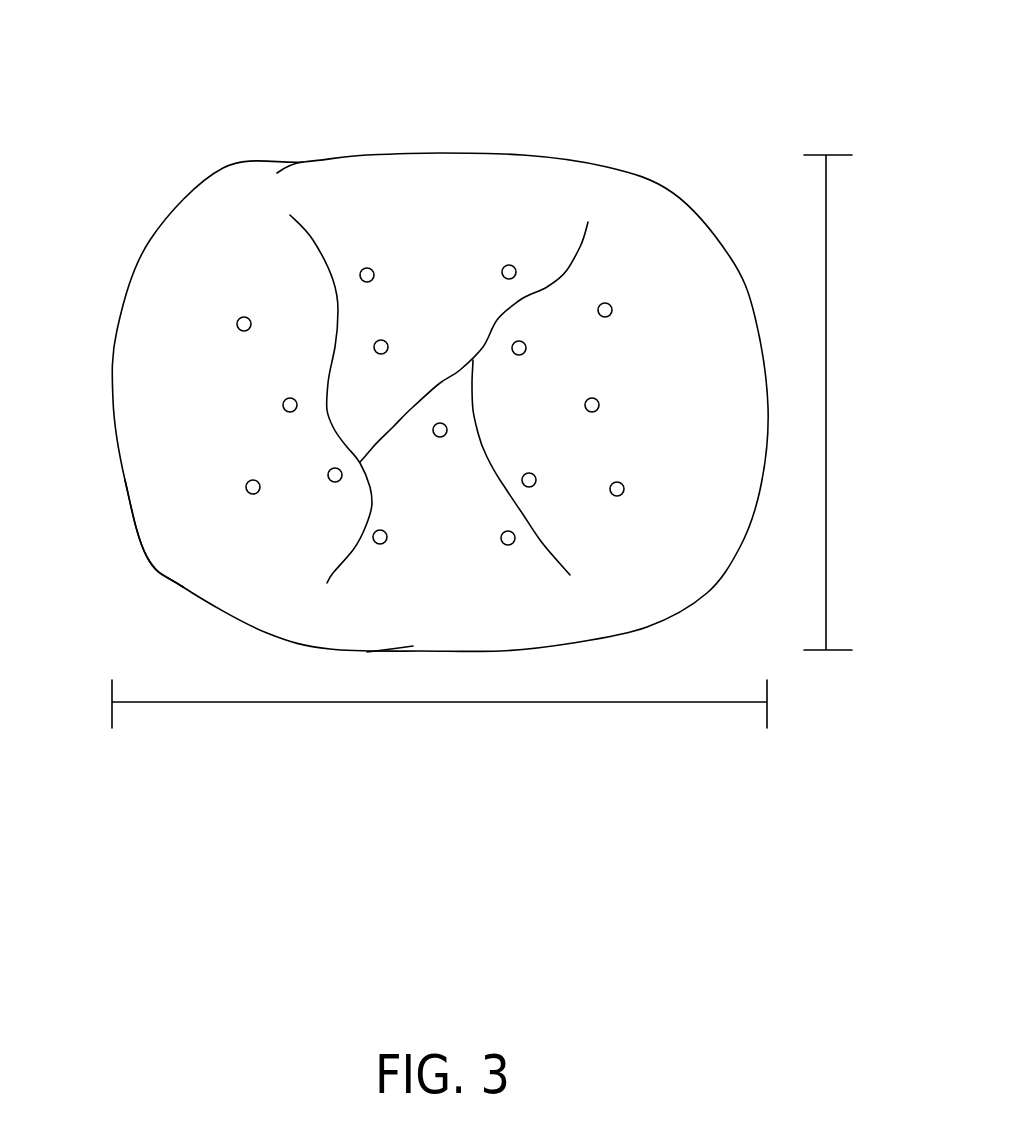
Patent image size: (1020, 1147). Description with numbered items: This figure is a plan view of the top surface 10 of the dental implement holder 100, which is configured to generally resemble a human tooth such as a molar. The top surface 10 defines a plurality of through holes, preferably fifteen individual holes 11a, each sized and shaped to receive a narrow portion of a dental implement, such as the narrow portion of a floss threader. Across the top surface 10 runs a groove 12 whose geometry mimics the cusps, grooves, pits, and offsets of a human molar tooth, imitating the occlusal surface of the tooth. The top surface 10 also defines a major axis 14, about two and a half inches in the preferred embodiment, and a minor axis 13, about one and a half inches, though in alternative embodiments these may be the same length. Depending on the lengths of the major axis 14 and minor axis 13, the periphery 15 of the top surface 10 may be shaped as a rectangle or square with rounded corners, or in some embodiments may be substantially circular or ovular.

The dental implement holder 100 is at (84, 98).
The top surface 10 is at (382, 203).
The individual holes 11a is at (242, 316).
The groove 12 is at (445, 360).
The minor axis 13 is at (826, 383).
The major axis 14 is at (432, 702).
The periphery 15 is at (122, 567).